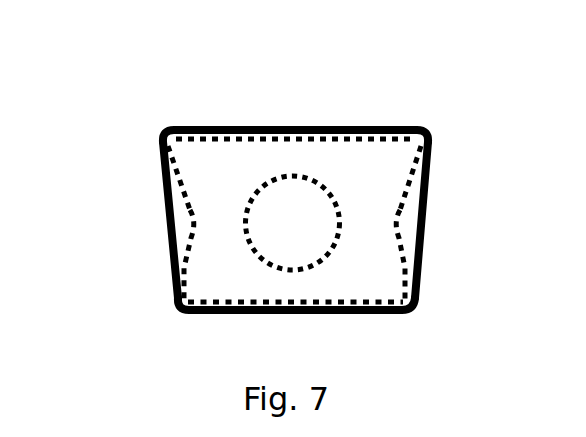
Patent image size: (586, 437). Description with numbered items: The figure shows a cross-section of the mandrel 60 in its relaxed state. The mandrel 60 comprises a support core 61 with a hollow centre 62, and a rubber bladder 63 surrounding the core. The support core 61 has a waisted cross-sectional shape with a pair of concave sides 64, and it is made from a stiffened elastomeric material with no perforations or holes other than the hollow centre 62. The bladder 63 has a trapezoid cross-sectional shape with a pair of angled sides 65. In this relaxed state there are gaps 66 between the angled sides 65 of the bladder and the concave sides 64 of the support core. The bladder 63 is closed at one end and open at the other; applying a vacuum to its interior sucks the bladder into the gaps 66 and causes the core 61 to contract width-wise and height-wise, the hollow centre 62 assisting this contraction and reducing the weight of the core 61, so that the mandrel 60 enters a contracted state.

The mandrel 60 is at (372, 97).
The support core 61 is at (355, 270).
The hollow centre 62 is at (277, 238).
The rubber bladder 63 is at (247, 127).
The concave sides 64 is at (178, 200).
The angled sides 65 is at (168, 262).
The gaps 66 is at (180, 233).